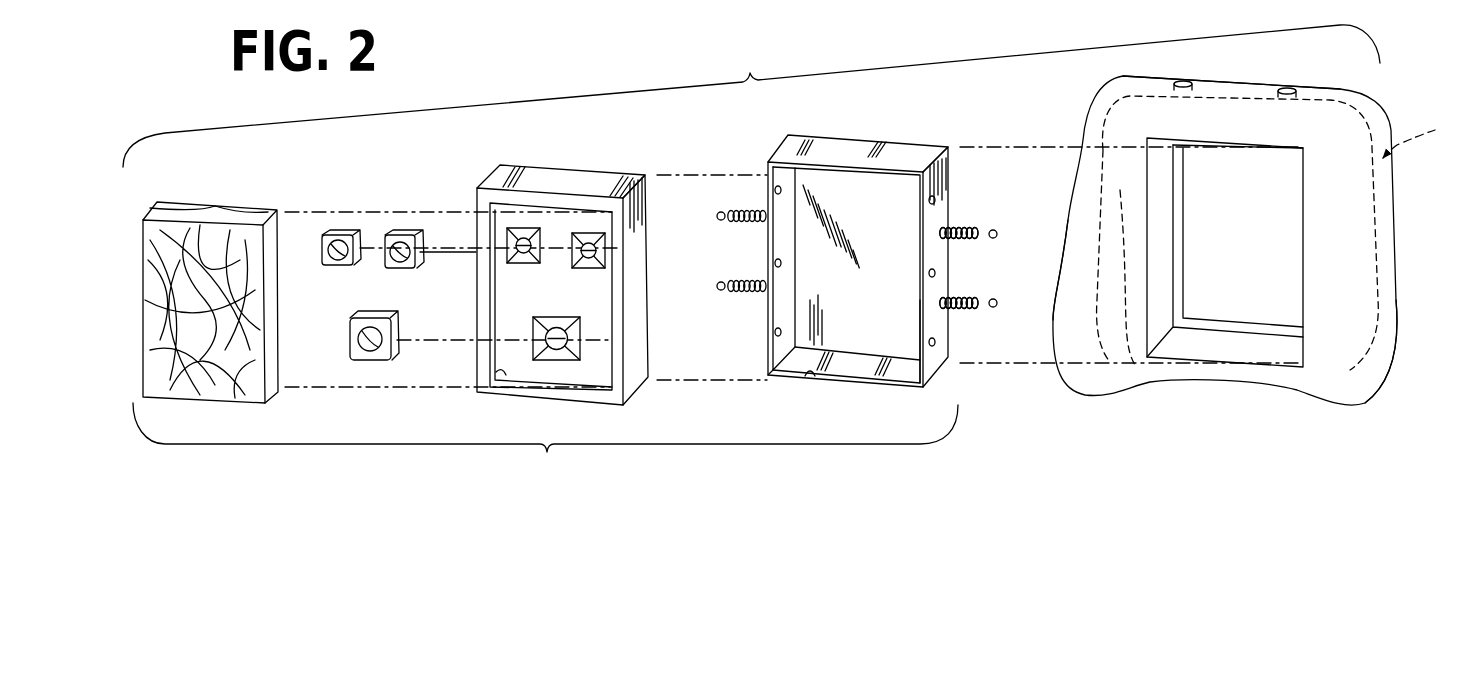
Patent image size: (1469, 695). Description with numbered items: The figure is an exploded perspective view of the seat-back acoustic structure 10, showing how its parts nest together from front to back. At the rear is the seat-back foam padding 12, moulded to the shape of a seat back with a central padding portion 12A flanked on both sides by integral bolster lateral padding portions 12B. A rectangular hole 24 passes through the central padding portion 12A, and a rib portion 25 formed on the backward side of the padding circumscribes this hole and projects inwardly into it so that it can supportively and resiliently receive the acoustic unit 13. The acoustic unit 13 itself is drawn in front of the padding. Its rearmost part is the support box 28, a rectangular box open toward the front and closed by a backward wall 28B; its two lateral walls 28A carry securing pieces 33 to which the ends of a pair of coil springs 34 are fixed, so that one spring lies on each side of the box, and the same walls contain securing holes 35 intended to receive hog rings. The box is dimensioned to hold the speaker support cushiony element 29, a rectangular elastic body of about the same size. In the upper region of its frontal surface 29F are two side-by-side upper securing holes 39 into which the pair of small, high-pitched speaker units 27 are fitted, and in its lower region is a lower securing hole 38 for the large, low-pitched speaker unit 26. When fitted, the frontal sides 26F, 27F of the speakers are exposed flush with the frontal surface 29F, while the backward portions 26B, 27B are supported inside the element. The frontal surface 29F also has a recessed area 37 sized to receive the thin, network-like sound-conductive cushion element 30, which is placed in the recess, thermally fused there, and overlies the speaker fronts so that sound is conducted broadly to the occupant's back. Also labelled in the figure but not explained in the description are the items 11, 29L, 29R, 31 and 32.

The seat-back acoustic structure 10 is at (751, 96).
The controller housing 11 is at (1419, 128).
The seat-back foam padding 12 is at (1221, 256).
The central padding portion 12A is at (1265, 133).
The bolster lateral padding portion 12B is at (1098, 348).
The acoustic unit 13 is at (545, 446).
The rectangular hole 24 is at (1193, 279).
The rib portion 25 is at (1184, 214).
The large speaker unit 26 is at (350, 368).
The backward portion of large speaker unit 26B is at (380, 360).
The frontal side of large speaker unit 26F is at (353, 352).
The small speaker unit 27 is at (372, 226).
The rear faces of upper nuts 27B is at (335, 233).
The frontal side of small speaker unit 27F is at (345, 265).
The support box 28 is at (849, 257).
The lateral wall of support box 28A is at (765, 170).
The backward wall of support box 28B is at (833, 282).
The speaker support cushiony element 29 is at (562, 276).
The frontal surface of speaker support cushiony element 29F is at (603, 372).
The left inner wall of frame 29L is at (477, 365).
The right side wall of frame 29R is at (628, 175).
The sound-conductive cushion element 30 is at (215, 208).
The bottom opening of holder box 31 is at (810, 372).
The flange strips of holder box 32 is at (765, 360).
The securing pieces 33 is at (947, 232).
The coil springs 34 is at (715, 218).
The securing holes 35 is at (779, 188).
The recessed area 37 is at (500, 376).
The lower securing hole 38 is at (580, 340).
The upper securing holes 39 is at (527, 230).